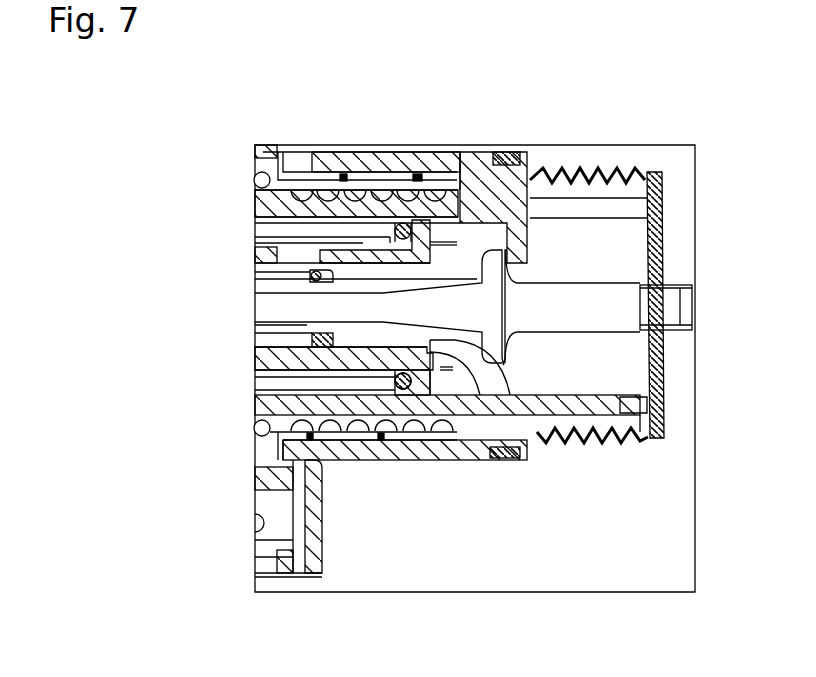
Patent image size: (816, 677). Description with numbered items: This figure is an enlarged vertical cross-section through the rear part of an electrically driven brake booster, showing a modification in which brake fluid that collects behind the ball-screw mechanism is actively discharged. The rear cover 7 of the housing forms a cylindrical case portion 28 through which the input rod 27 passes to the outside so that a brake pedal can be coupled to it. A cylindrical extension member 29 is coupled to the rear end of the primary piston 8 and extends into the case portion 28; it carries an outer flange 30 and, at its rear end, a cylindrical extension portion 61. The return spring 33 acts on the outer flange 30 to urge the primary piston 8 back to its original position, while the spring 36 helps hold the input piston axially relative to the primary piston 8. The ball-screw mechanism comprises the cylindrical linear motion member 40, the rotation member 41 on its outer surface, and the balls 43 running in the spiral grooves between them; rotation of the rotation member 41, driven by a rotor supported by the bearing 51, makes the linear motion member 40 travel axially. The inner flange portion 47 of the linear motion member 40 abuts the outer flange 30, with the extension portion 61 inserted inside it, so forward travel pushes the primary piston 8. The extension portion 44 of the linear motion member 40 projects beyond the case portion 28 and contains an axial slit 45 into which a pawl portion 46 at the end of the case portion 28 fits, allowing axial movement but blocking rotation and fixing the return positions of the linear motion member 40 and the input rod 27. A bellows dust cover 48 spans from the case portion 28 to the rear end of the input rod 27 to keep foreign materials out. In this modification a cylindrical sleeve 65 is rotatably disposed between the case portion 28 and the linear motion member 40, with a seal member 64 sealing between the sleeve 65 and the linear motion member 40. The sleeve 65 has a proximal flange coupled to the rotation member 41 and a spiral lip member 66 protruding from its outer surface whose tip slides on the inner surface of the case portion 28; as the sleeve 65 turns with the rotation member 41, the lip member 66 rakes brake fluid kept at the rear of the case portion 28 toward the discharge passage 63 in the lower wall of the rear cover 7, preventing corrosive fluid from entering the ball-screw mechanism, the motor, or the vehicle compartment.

The rear cover 7 is at (320, 147).
The primary piston 8 is at (257, 250).
The input rod 27 is at (593, 288).
The case portion 28 is at (438, 156).
The extension member 29 is at (378, 241).
The outer flange 30 is at (423, 395).
The return spring 33 is at (402, 390).
The spring 36 is at (312, 334).
The linear motion member 40 is at (336, 198).
The rotation member 41 is at (256, 448).
The balls 43 is at (256, 181).
The extension portion 44 is at (657, 433).
The slit 45 is at (581, 203).
The pawl portion 46 is at (546, 183).
The inner flange portion 47 is at (500, 447).
The bellows dust cover 48 is at (664, 360).
The bearing 51 is at (257, 523).
The cylindrical extension portion 61 is at (490, 380).
The discharge passage 63 is at (303, 574).
The seal member 64 is at (452, 162).
The cylindrical sleeve 65 is at (350, 462).
The spiral lip member 66 is at (440, 390).